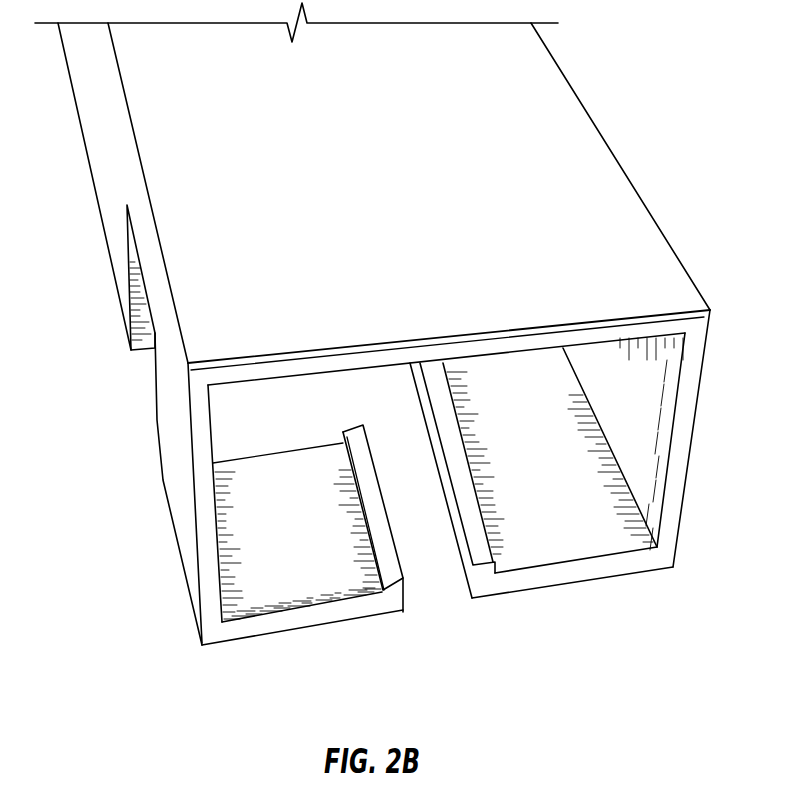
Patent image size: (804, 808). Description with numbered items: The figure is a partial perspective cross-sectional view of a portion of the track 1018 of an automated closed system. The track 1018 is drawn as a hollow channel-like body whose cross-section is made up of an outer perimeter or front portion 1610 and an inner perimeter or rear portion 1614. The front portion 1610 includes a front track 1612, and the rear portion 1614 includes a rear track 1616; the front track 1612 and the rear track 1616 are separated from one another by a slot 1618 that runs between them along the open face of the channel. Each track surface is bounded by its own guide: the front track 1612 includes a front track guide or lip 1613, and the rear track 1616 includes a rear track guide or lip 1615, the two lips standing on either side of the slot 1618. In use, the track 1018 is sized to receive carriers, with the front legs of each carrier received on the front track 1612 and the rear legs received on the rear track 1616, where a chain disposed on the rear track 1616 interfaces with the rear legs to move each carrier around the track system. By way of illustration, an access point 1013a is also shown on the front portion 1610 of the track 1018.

The track 1018 is at (614, 88).
The access point 1013a is at (146, 385).
The front portion 1610 is at (167, 574).
The front track 1612 is at (260, 592).
The front track guide or lip 1613 is at (390, 570).
The rear portion 1614 is at (690, 539).
The rear track guide or lip 1615 is at (480, 550).
The rear track 1616 is at (563, 547).
The slot 1618 is at (433, 580).